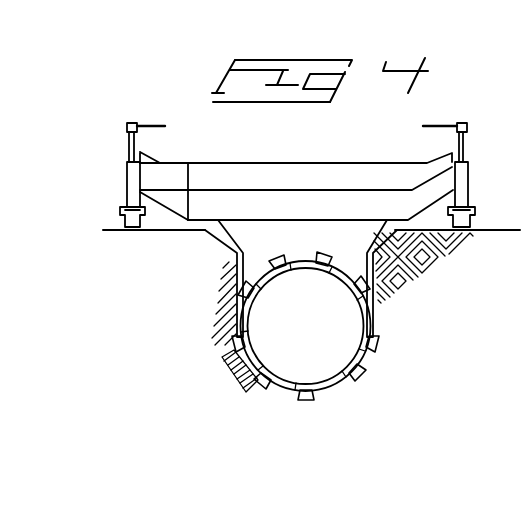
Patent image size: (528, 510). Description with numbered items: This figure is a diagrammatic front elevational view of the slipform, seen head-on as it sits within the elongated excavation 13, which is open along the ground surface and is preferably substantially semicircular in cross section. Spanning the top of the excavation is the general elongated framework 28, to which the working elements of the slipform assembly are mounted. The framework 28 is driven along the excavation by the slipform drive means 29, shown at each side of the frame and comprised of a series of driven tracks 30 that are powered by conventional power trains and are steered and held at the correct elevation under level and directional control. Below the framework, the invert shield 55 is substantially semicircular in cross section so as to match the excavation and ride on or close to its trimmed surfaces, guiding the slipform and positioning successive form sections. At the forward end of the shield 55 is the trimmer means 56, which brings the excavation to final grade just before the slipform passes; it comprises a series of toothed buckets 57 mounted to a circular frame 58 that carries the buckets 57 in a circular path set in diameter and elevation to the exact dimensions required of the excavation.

The excavation 13 is at (386, 302).
The elongated framework 28 is at (378, 163).
The slipform drive means 29 is at (121, 216).
The driven tracks 30 is at (128, 227).
The invert shield 55 is at (367, 358).
The trimmer means 56 is at (285, 263).
The toothed buckets 57 is at (327, 271).
The circular frame 58 is at (375, 313).